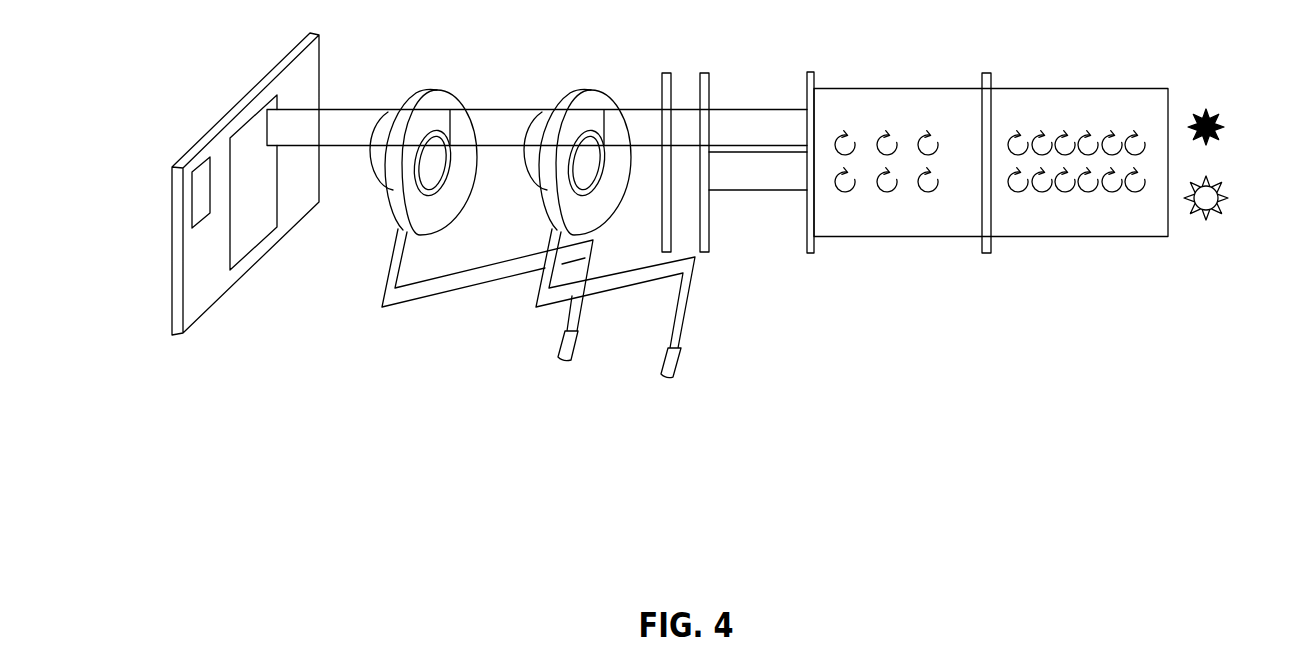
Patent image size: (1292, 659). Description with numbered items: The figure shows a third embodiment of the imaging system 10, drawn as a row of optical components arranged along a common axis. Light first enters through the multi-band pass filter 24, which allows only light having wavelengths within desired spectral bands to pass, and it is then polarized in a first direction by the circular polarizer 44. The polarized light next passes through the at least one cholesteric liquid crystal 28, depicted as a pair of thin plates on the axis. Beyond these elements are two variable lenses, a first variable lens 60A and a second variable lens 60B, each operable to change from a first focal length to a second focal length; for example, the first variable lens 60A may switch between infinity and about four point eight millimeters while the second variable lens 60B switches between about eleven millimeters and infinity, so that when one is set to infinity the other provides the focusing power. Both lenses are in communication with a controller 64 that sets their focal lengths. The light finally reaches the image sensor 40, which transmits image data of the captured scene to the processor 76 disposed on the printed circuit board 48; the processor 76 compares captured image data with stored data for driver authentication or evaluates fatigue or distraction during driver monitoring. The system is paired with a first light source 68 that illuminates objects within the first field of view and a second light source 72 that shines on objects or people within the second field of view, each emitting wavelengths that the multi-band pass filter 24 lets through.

The imaging system 10 is at (130, 205).
The multi-band pass filter 24 is at (815, 242).
The cholesteric liquid crystal 28 is at (710, 88).
The image sensor 40 is at (243, 143).
The circular polarizer 44 is at (992, 242).
The printed circuit board 48 is at (207, 273).
The first variable lens 60A is at (450, 100).
The second variable lens 60B is at (604, 100).
The controller 64 is at (578, 344).
The first light source 68 is at (1225, 127).
The second light source 72 is at (1228, 197).
The processor 76 is at (202, 178).